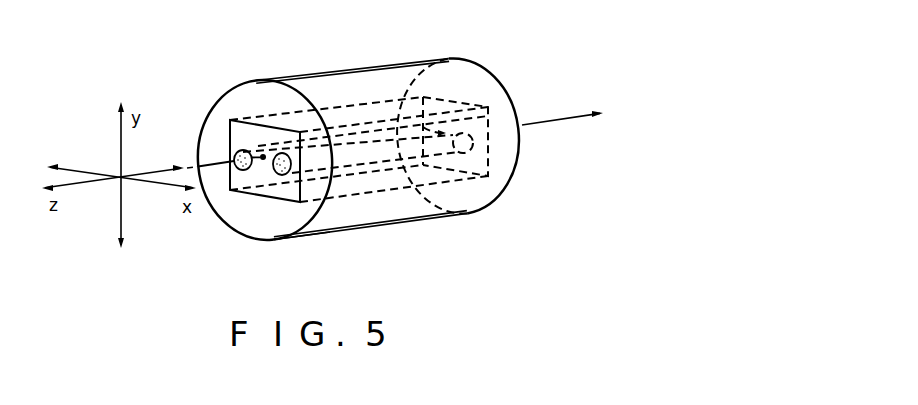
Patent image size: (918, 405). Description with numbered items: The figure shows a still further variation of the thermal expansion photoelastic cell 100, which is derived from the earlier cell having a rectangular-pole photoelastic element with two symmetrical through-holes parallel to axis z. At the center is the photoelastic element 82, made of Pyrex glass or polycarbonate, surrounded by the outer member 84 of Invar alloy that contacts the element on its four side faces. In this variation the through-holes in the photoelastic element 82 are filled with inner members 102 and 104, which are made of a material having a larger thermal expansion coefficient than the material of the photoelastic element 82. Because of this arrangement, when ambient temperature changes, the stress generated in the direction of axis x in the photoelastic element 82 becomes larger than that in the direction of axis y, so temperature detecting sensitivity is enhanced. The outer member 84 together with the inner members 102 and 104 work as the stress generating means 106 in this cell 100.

The thermal expansion photoelastic cell 100 is at (398, 58).
The outer member 84 is at (262, 97).
The photoelastic element 82 is at (237, 191).
The inner member 102 is at (235, 153).
The inner member 104 is at (282, 174).
The stress generating means 106 is at (258, 222).